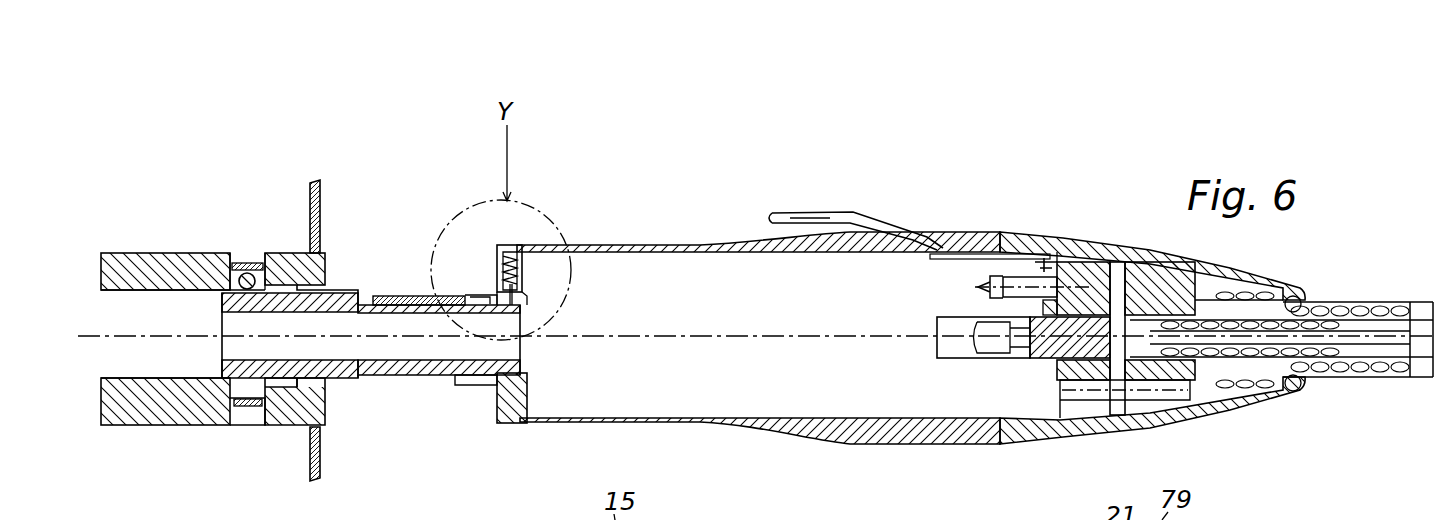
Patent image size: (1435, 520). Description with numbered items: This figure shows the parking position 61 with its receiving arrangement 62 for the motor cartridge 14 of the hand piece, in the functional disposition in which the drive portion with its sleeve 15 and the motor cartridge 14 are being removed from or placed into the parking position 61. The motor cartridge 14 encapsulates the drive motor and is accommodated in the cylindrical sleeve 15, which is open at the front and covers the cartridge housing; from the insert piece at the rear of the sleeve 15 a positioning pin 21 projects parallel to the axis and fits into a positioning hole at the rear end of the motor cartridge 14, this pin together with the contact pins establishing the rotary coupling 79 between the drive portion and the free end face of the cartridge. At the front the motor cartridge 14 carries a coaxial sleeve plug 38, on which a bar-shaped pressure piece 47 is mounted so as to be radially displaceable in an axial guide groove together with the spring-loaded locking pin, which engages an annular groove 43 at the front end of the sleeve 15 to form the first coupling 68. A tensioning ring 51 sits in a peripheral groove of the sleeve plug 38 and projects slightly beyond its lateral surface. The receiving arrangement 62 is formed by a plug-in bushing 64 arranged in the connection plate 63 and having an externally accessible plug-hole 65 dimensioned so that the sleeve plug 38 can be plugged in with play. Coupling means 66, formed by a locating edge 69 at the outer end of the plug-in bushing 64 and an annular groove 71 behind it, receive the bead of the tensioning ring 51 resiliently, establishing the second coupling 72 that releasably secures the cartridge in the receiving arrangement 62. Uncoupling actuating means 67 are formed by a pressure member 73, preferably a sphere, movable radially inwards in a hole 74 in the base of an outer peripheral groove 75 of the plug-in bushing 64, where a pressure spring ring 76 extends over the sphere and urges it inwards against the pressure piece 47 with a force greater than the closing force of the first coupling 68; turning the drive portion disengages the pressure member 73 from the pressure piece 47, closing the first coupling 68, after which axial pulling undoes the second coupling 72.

The motor cartridge 14 is at (692, 280).
The sleeve 15 is at (633, 247).
The positioning pin 21 is at (1013, 282).
The sleeve plug 38 is at (346, 300).
The annular groove 43 is at (508, 424).
The pressure piece 47 is at (397, 296).
The tensioning ring 51 is at (478, 378).
The parking position 61 is at (267, 173).
The receiving arrangement 62 is at (257, 178).
The connection plate 63 is at (330, 193).
The plug-in bushing 64 is at (122, 265).
The plug-hole 65 is at (158, 362).
The coupling means 66 is at (187, 265).
The uncoupling actuating means 67 is at (169, 332).
The first coupling 68 is at (516, 243).
The locating edge 69 is at (373, 205).
The annular groove 71 is at (308, 383).
The second coupling 72 is at (335, 285).
The pressure member 73 is at (237, 287).
The hole 74 is at (237, 286).
The outer peripheral groove 75 is at (237, 265).
The pressure spring ring 76 is at (236, 275).
The rotary coupling 79 is at (1038, 270).